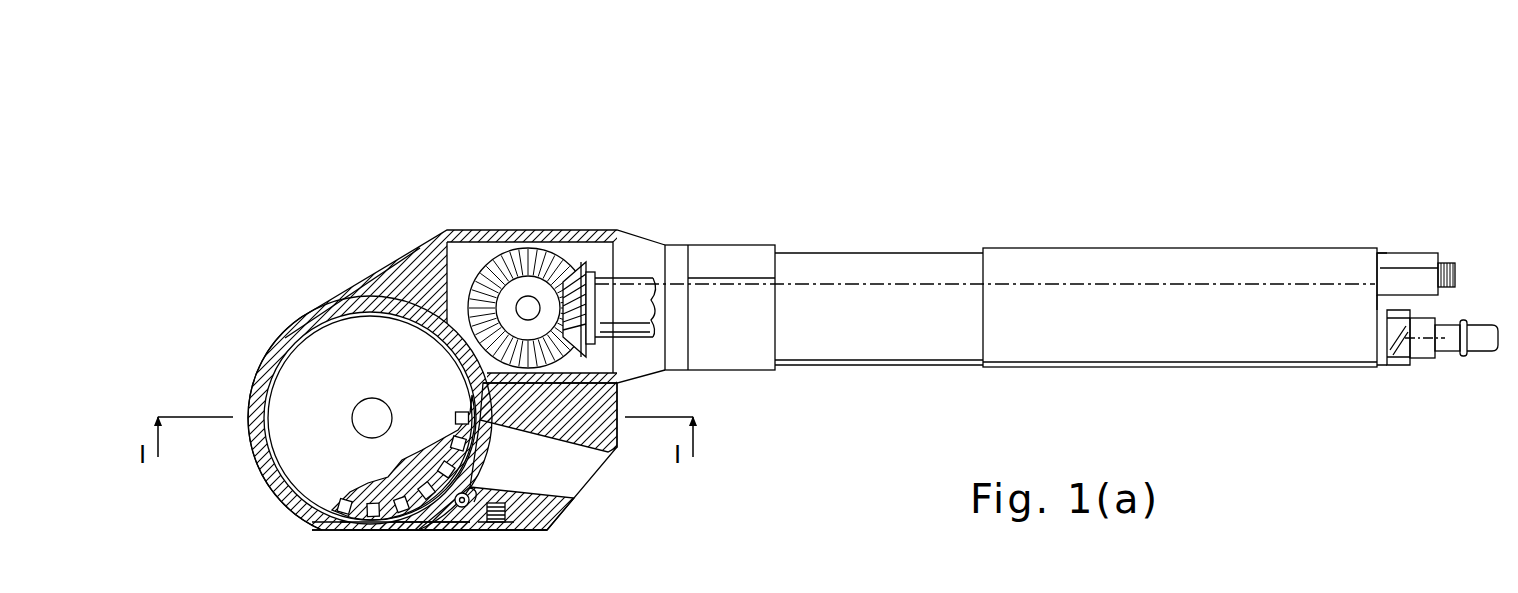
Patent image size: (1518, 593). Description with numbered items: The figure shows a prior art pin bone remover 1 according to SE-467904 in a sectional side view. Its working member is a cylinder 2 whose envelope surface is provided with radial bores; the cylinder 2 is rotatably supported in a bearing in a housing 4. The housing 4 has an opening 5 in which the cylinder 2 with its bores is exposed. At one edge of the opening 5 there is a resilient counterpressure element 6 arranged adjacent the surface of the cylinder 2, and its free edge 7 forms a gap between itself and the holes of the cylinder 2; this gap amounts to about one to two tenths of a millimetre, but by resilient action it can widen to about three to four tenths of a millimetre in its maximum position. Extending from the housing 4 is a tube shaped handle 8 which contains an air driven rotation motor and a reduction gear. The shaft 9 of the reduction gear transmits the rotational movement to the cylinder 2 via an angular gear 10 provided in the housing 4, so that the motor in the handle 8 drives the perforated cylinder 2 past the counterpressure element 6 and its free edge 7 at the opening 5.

The pin bone remover 1 is at (693, 152).
The cylinder 2 is at (278, 472).
The housing 4 is at (380, 263).
The opening 5 is at (337, 535).
The resilient counterpressure element 6 is at (455, 502).
The free edge 7 is at (367, 529).
The tube shaped handle 8 is at (1033, 246).
The shaft 9 is at (612, 300).
The angular gear 10 is at (558, 252).